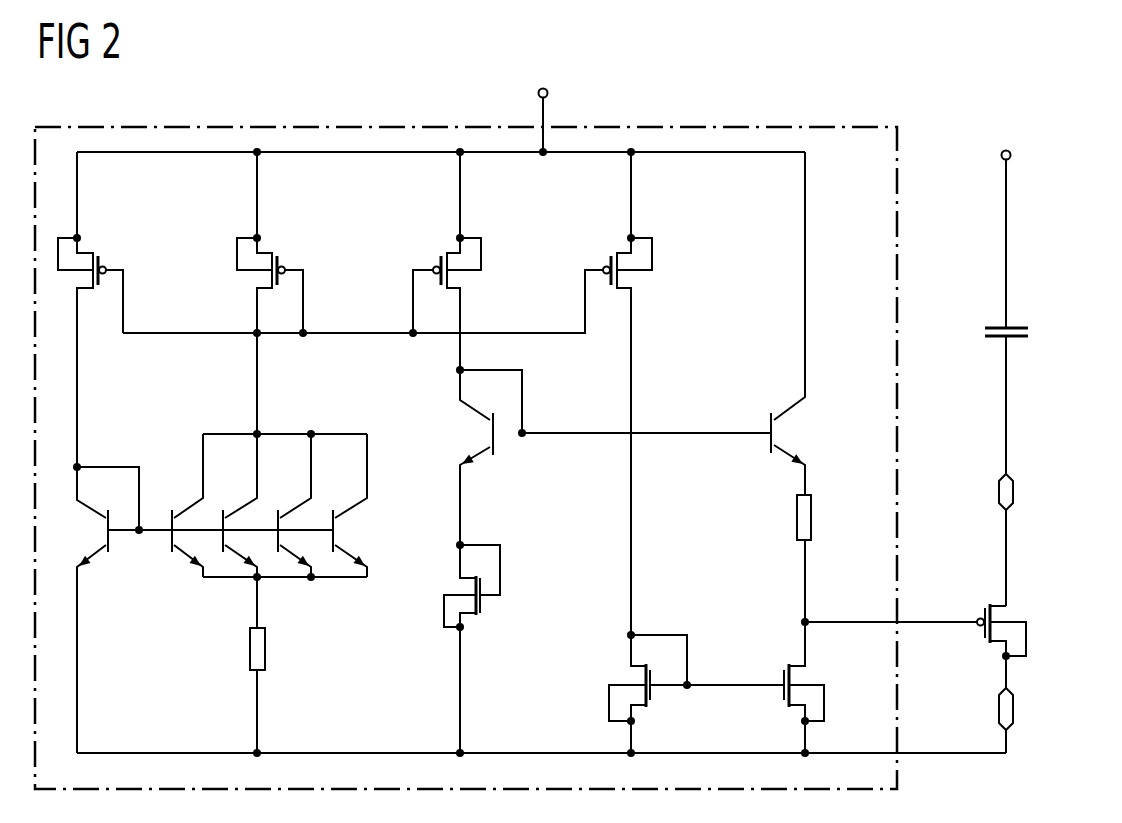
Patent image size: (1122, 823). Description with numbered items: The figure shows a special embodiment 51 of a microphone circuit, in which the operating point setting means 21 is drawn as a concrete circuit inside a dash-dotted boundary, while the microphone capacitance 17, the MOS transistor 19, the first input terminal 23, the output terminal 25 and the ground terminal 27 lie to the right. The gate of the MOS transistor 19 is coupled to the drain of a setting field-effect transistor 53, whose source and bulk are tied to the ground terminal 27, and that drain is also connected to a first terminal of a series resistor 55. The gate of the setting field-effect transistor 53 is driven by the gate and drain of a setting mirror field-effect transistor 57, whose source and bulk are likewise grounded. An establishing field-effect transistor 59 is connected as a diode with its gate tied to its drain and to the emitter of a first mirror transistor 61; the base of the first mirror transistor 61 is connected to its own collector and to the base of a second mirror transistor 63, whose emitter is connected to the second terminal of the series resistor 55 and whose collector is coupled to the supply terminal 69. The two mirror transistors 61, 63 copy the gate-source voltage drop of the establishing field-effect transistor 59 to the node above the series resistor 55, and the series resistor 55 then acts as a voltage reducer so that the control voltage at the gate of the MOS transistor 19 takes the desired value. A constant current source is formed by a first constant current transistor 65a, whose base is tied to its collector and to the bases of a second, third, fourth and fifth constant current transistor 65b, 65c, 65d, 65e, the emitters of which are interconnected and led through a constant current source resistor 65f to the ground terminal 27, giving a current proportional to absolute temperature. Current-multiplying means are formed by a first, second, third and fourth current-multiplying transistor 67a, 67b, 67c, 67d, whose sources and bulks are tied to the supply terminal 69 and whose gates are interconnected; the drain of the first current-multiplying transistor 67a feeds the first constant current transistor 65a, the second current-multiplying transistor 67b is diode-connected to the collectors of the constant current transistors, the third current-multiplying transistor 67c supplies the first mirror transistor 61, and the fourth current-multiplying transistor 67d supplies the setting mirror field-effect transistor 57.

The microphone capacitance 17 is at (1030, 333).
The MOS transistor 19 is at (982, 616).
The operating point setting means 21 is at (897, 394).
The first input terminal 23 is at (1011, 156).
The output terminal 25 is at (1013, 490).
The ground terminal 27 is at (1013, 710).
The special embodiment 51 is at (888, 86).
The setting field-effect transistor 53 is at (783, 673).
The series resistor 55 is at (796, 520).
The setting mirror field-effect transistor 57 is at (652, 700).
The establishing field-effect transistor 59 is at (481, 611).
The first mirror transistor 61 is at (498, 448).
The second mirror transistor 63 is at (769, 418).
The first constant current transistor 65a is at (112, 542).
The second constant current transistor 65b is at (188, 507).
The third constant current transistor 65c is at (243, 507).
The fourth constant current transistor 65d is at (298, 507).
The fifth constant current transistor 65e is at (353, 507).
The constant current source resistor 65f is at (266, 650).
The first current-multiplying transistor 67a is at (106, 260).
The second current-multiplying transistor 67b is at (286, 260).
The third current-multiplying transistor 67c is at (438, 258).
The fourth current-multiplying transistor 67d is at (608, 258).
The supply terminal 69 is at (548, 92).